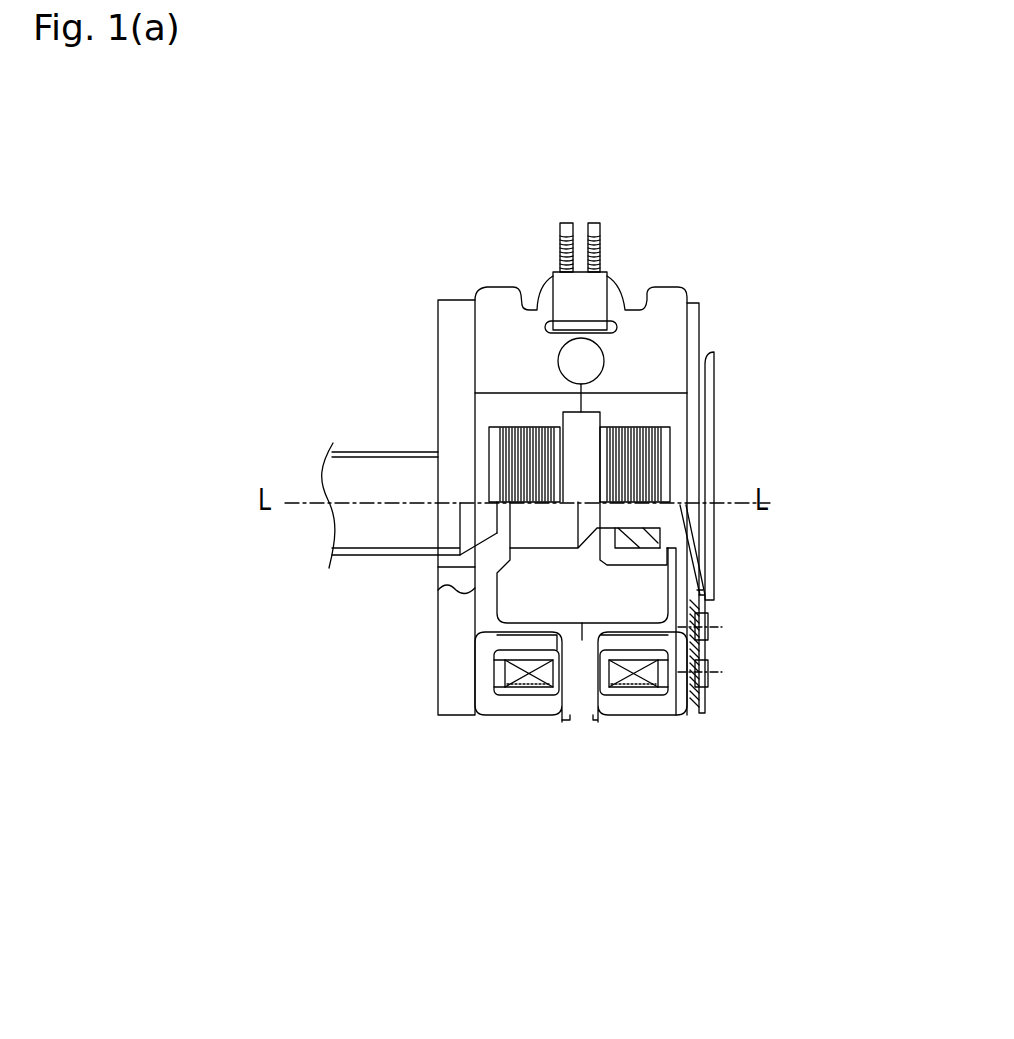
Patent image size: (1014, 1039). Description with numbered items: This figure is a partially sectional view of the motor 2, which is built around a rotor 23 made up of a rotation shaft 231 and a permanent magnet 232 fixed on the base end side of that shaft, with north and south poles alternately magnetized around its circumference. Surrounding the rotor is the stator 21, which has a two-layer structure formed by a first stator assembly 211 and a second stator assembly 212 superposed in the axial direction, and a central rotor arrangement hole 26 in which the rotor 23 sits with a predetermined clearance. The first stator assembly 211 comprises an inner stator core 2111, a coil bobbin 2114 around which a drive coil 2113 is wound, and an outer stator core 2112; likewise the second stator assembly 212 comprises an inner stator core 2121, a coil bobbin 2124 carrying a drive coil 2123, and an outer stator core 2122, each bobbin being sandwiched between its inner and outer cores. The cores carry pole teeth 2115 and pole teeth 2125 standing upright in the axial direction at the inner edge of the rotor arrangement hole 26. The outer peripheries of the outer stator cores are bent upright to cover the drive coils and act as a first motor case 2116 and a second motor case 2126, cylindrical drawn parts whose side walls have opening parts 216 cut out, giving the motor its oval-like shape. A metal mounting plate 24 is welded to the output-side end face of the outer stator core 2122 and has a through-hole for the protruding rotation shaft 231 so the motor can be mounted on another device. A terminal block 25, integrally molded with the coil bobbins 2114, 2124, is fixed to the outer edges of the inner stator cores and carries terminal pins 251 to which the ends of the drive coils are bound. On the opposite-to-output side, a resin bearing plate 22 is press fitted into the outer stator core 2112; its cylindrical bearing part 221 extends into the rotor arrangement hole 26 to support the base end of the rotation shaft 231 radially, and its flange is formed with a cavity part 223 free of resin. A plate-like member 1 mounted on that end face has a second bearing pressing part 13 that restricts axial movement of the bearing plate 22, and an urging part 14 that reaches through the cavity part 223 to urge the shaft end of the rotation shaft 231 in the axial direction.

The plate-like member 1 is at (718, 308).
The motor 2 is at (742, 851).
The second bearing pressing part 13 is at (708, 443).
The urging part 14 is at (683, 523).
The stator 21 is at (561, 774).
The first stator assembly 211 is at (692, 724).
The inner stator core 2111 is at (594, 720).
The outer stator core 2112 is at (685, 712).
The drive coil 2113 is at (650, 427).
The coil bobbin 2114 is at (667, 682).
The pole teeth 2115 is at (697, 600).
The first motor case 2116 is at (675, 283).
The second stator assembly 212 is at (449, 775).
The inner stator core 2121 is at (567, 718).
The outer stator core 2122 is at (545, 715).
The drive coil 2123 is at (516, 433).
The coil bobbin 2124 is at (500, 673).
The pole teeth 2125 is at (517, 637).
The second motor case 2126 is at (503, 290).
The opening parts 216 is at (547, 427).
The bearing plate 22 is at (703, 627).
The bearing part 221 is at (672, 585).
The cavity part 223 is at (703, 592).
The rotor 23 is at (372, 236).
The rotation shaft 231 is at (373, 452).
The permanent magnet 232 is at (537, 583).
The mounting plate 24 is at (437, 320).
The terminal block 25 is at (608, 280).
The terminal pins 251 is at (566, 223).
The rotor arrangement hole 26 is at (480, 597).